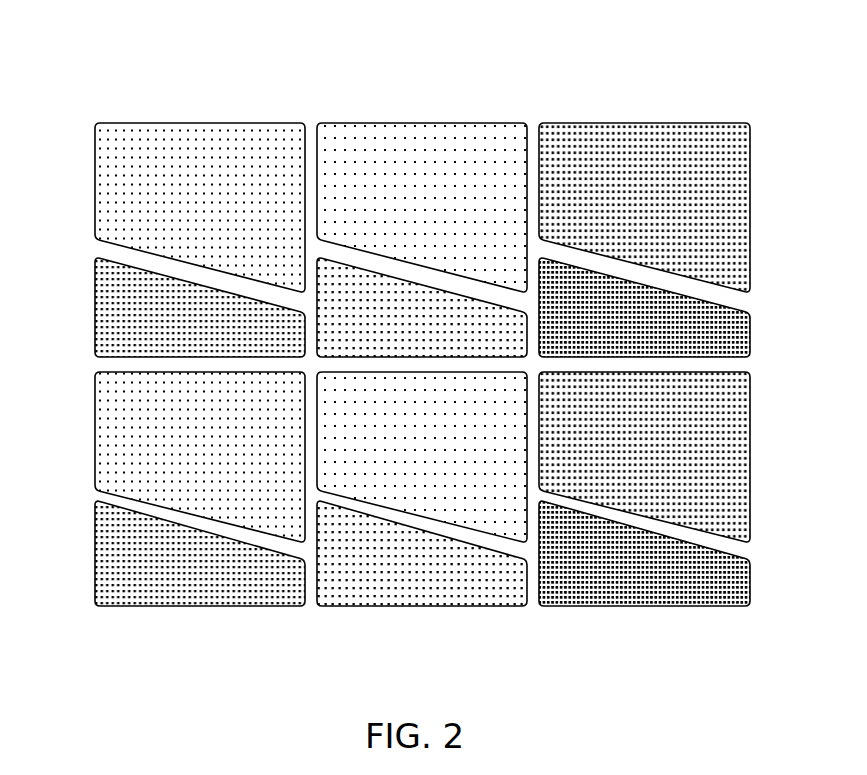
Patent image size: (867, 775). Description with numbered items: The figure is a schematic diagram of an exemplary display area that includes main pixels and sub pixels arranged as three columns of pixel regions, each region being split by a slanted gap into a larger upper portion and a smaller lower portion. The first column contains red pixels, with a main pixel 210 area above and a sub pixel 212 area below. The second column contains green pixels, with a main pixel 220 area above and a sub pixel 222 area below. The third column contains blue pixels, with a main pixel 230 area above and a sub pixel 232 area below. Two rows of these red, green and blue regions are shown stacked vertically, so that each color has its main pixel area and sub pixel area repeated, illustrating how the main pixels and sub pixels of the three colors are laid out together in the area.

The main pixel 210 is at (178, 157).
The sub pixel 212 is at (123, 328).
The main pixel 220 is at (423, 163).
The sub pixel 222 is at (470, 320).
The main pixel 230 is at (670, 152).
The sub pixel 232 is at (730, 318).